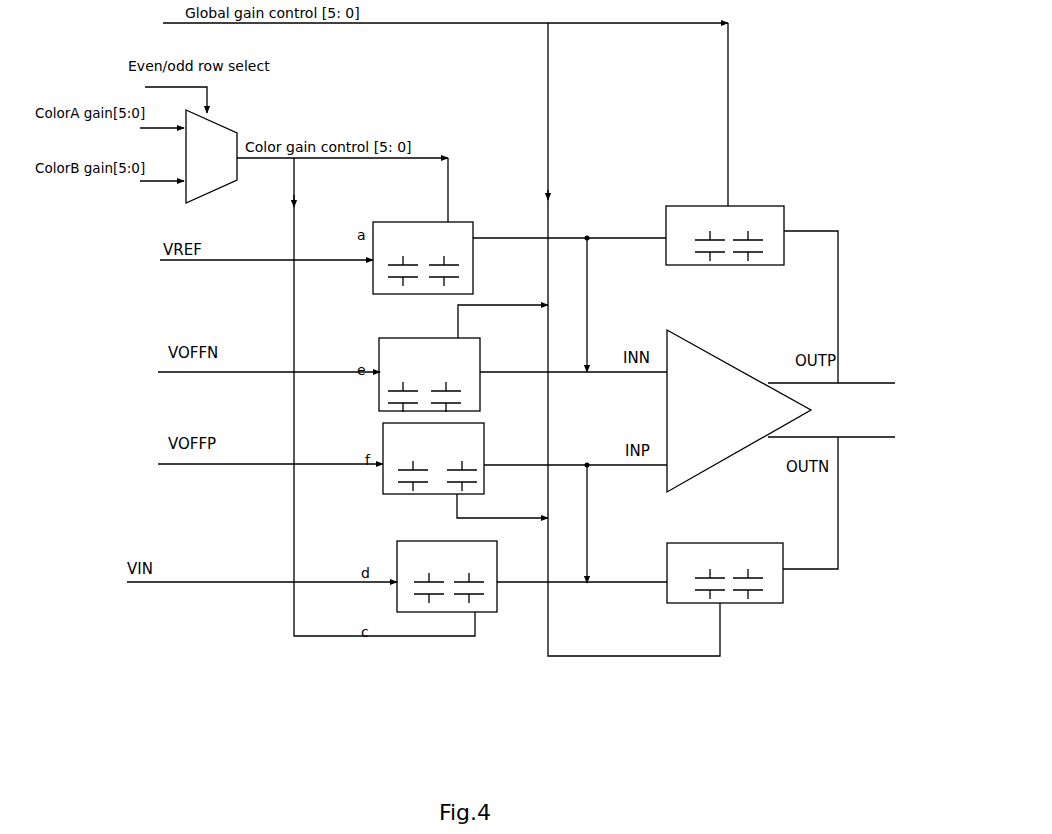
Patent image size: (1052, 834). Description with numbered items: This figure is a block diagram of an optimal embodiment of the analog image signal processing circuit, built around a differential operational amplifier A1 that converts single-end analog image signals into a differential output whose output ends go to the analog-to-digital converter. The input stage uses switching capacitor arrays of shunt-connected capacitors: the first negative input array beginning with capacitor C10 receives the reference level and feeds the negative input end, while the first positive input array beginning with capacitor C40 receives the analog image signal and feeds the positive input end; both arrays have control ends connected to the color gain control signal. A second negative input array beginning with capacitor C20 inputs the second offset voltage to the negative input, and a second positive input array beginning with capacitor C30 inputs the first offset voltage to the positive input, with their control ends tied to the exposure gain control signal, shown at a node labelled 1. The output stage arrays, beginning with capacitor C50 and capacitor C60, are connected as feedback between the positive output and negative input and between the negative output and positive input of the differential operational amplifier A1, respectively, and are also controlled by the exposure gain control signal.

The node 1 connection 1 is at (503, 331).
The capacitor of the first negative input stage switching capacitor array C10 is at (423, 258).
The capacitor of the second negative input stage switching capacitor array C20 is at (429, 375).
The capacitor of the second positive input stage switching capacitor array C30 is at (433, 458).
The capacitor of the first positive input stage switching capacitor array C40 is at (447, 576).
The capacitor of the positive output stage switching capacitor array C50 is at (725, 235).
The capacitor of the negative output stage switching capacitor array C60 is at (725, 573).
The differential operational amplifier A1 is at (781, 411).